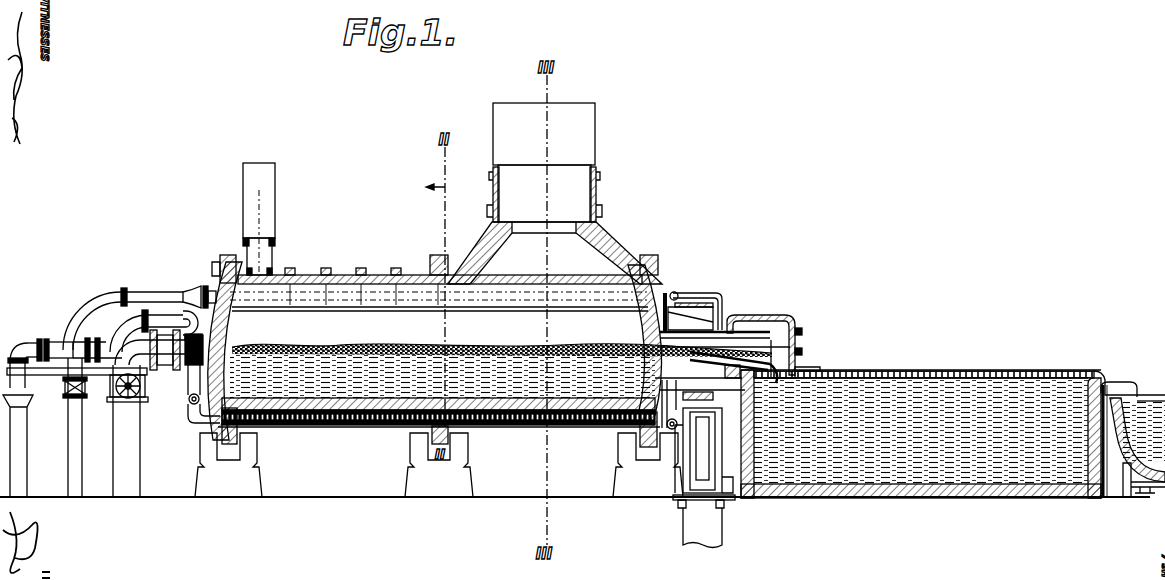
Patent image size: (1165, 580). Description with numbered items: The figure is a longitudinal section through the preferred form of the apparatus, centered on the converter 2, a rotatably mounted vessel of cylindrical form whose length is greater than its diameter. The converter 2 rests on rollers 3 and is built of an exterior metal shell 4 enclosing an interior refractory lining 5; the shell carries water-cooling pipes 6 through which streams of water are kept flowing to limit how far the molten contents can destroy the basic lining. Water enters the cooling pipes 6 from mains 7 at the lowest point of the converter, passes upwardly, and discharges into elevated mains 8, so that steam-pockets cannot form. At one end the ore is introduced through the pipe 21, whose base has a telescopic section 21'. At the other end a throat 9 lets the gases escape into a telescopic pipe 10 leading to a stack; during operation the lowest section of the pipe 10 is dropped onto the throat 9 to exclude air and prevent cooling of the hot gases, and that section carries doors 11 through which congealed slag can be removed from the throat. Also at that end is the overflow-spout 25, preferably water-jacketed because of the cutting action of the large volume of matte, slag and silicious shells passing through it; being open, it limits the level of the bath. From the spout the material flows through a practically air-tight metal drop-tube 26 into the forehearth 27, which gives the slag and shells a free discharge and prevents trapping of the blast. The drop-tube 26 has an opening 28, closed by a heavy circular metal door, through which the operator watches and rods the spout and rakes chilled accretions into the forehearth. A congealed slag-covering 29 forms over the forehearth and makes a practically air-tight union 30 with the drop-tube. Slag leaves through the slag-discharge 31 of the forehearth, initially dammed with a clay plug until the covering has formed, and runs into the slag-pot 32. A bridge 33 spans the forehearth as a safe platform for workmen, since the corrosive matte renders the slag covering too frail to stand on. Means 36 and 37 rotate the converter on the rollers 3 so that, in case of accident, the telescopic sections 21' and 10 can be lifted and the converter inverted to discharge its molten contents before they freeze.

The converter 2 is at (492, 326).
The rollers 3 is at (230, 454).
The exterior metal shell 4 is at (322, 418).
The interior refractory lining 5 is at (229, 341).
The water-cooling pipes 6 is at (388, 413).
The mains 7 is at (196, 421).
The elevated mains 8 is at (216, 290).
The throat 9 is at (555, 253).
The telescopic pipe 10 is at (544, 162).
The doors 11 is at (496, 213).
The feed-tube 21 is at (274, 200).
The telescopic section 21' is at (279, 256).
The overflow-spout 25 is at (738, 347).
The metal drop-tube 26 is at (791, 326).
The forehearth 27 is at (962, 377).
The opening 28 is at (802, 343).
The congealed slag-covering 29 is at (1023, 378).
The air-tight union 30 is at (800, 367).
The slag-discharge 31 is at (1104, 384).
The slag-pot 32 is at (1138, 400).
The bridge 33 is at (860, 371).
The rotating means 36 is at (701, 524).
The rotating means 37 is at (704, 454).